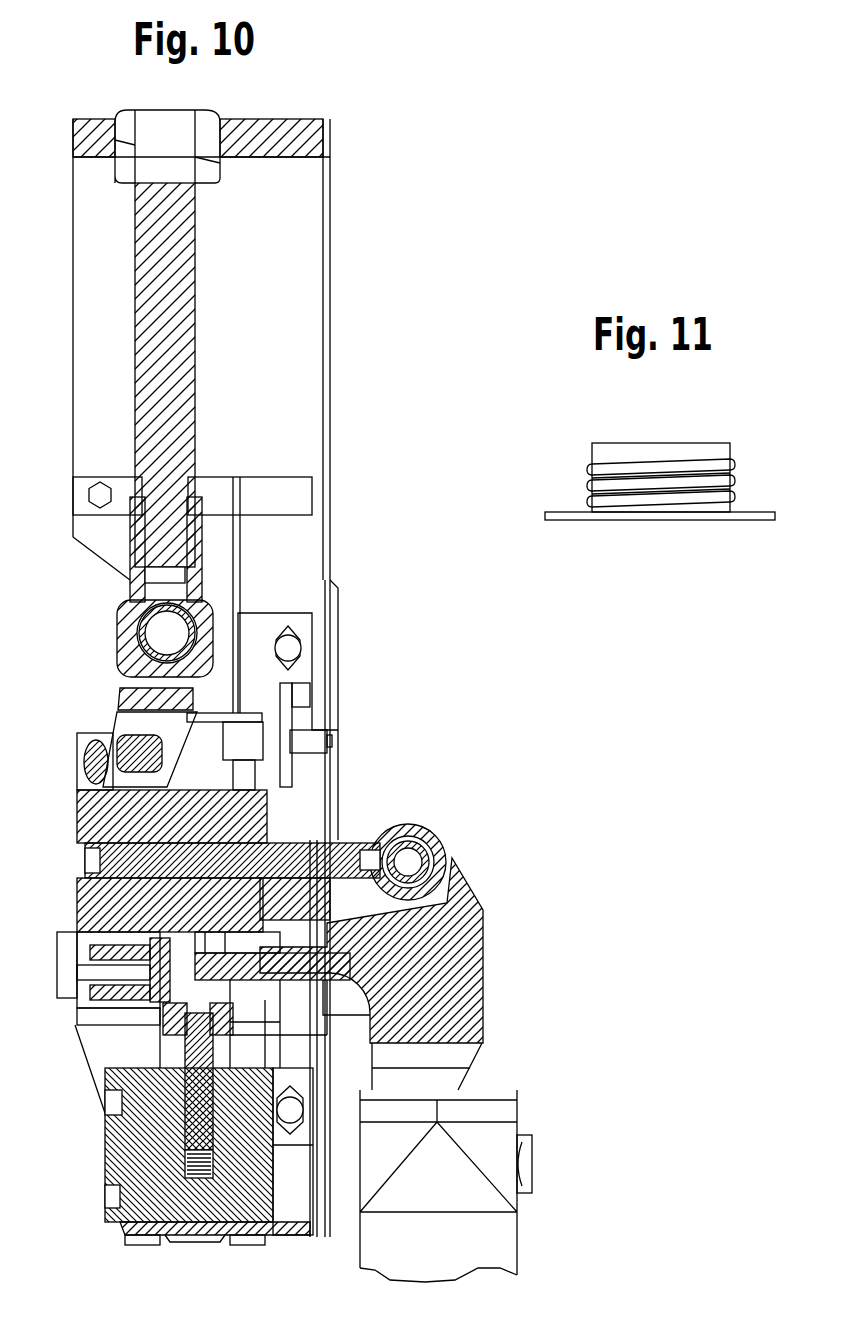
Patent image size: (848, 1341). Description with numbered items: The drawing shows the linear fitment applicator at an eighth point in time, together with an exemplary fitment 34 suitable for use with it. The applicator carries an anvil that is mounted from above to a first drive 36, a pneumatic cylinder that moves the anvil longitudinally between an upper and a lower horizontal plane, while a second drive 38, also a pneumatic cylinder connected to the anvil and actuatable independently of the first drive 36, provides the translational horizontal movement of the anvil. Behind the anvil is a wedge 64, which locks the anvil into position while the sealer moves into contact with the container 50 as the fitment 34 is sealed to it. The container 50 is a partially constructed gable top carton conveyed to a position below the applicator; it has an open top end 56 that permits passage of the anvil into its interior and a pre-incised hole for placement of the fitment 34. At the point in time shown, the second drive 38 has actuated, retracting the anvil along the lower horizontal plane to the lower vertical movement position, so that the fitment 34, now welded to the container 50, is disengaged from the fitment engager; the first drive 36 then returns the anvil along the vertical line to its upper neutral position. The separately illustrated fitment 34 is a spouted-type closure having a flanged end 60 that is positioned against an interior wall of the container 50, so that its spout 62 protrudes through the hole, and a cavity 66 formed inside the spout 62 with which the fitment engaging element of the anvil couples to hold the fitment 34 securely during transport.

In FIG. 10, the fitment 34 is at (532, 1168).
In FIG. 11, the fitment 34 is at (742, 450).
In FIG. 10, the first drive 36 is at (190, 288).
In FIG. 10, the second drive 38 is at (115, 871).
In FIG. 10, the container 50 is at (500, 1253).
In FIG. 10, the open top end 56 is at (498, 1074).
In FIG. 11, the flanged end 60 is at (750, 510).
In FIG. 11, the spout 62 is at (590, 472).
In FIG. 10, the wedge 64 is at (183, 1110).
In FIG. 11, the cavity 66 is at (617, 478).